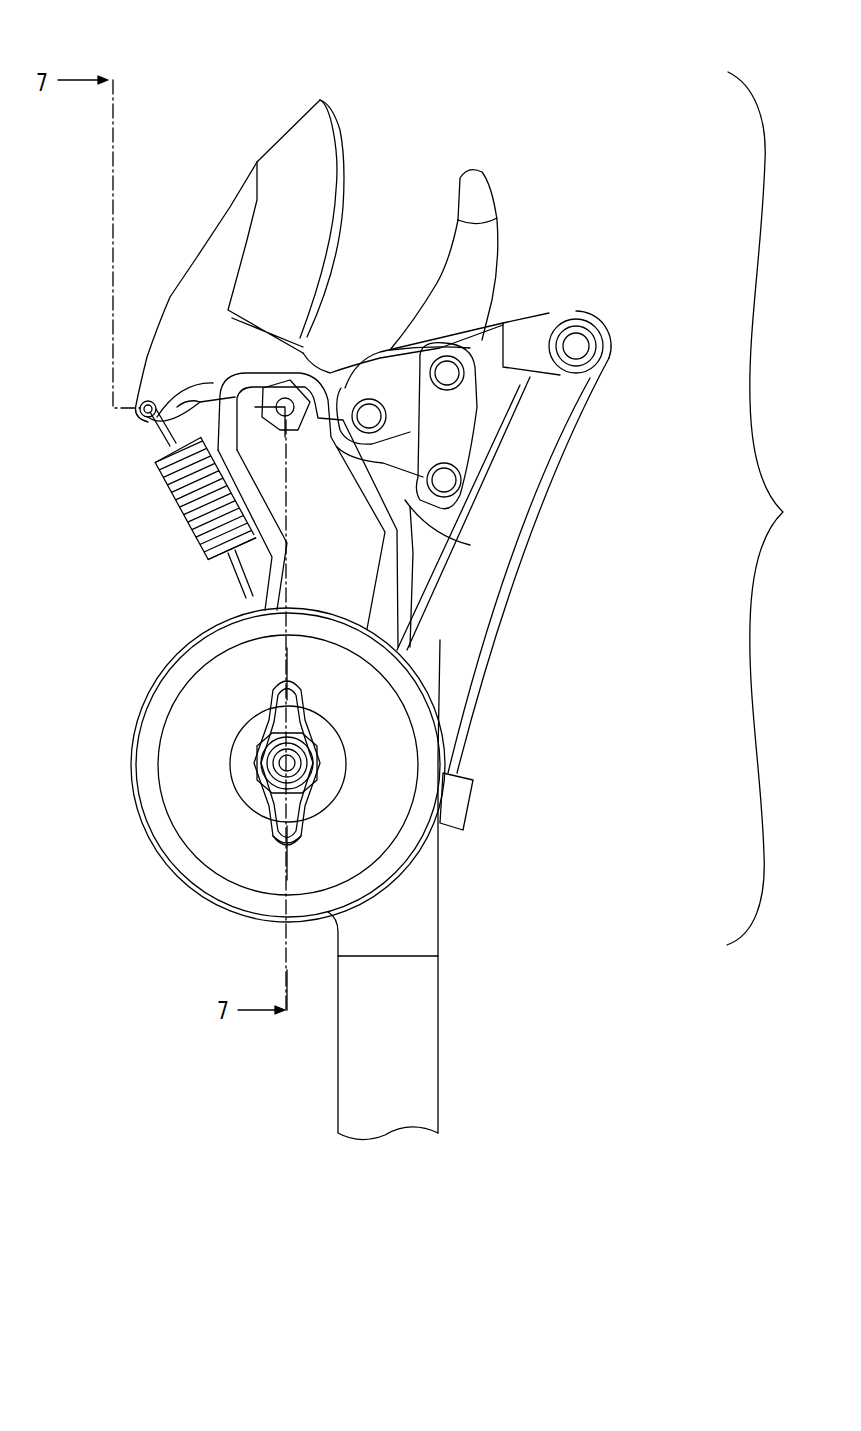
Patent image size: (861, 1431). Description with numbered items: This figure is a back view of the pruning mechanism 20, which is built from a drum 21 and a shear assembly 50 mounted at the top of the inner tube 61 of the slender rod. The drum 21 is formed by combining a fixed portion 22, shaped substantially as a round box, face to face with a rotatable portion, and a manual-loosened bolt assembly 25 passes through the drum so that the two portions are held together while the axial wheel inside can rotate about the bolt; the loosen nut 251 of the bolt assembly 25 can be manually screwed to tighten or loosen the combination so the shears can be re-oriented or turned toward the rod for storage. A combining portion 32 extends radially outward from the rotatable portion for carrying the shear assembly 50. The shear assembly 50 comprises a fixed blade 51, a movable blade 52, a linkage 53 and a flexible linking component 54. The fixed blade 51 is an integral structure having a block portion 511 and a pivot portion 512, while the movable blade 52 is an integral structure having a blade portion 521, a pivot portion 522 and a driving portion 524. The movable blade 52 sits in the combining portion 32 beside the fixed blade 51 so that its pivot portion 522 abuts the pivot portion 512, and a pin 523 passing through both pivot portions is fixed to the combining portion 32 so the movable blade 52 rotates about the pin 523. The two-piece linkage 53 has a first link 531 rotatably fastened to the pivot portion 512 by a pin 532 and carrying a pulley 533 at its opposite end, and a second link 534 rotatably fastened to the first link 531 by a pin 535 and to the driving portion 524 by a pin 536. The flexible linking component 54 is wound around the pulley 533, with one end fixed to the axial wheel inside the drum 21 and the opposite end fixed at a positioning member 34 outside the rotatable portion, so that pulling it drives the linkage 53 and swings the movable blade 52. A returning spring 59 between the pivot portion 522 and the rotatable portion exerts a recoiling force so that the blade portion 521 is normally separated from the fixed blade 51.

The pruning mechanism 20 is at (773, 508).
The drum 21 is at (139, 654).
The fixed portion 22 is at (170, 762).
The manual-loosened bolt assembly 25 is at (327, 675).
The loosen nut 251 is at (277, 838).
The combining portion 32 is at (298, 560).
The positioning member 34 is at (467, 808).
The shear assembly 50 is at (300, 90).
The fixed blade 51 is at (486, 146).
The block portion 511 is at (495, 218).
The pivot portion 512 is at (353, 377).
The movable blade 52 is at (226, 154).
The blade portion 521 is at (343, 190).
The pivot portion 522 is at (215, 385).
The pin 523 is at (288, 413).
The driving portion 524 is at (465, 503).
The linkage 53 is at (606, 292).
The first link 531 is at (470, 348).
The pin 532 is at (368, 443).
The pulley 533 is at (606, 342).
The second link 534 is at (430, 430).
The pin 535 is at (455, 374).
The pin 536 is at (455, 484).
The flexible linking component 54 is at (523, 567).
The returning spring 59 is at (190, 508).
The inner tube 61 is at (433, 1060).